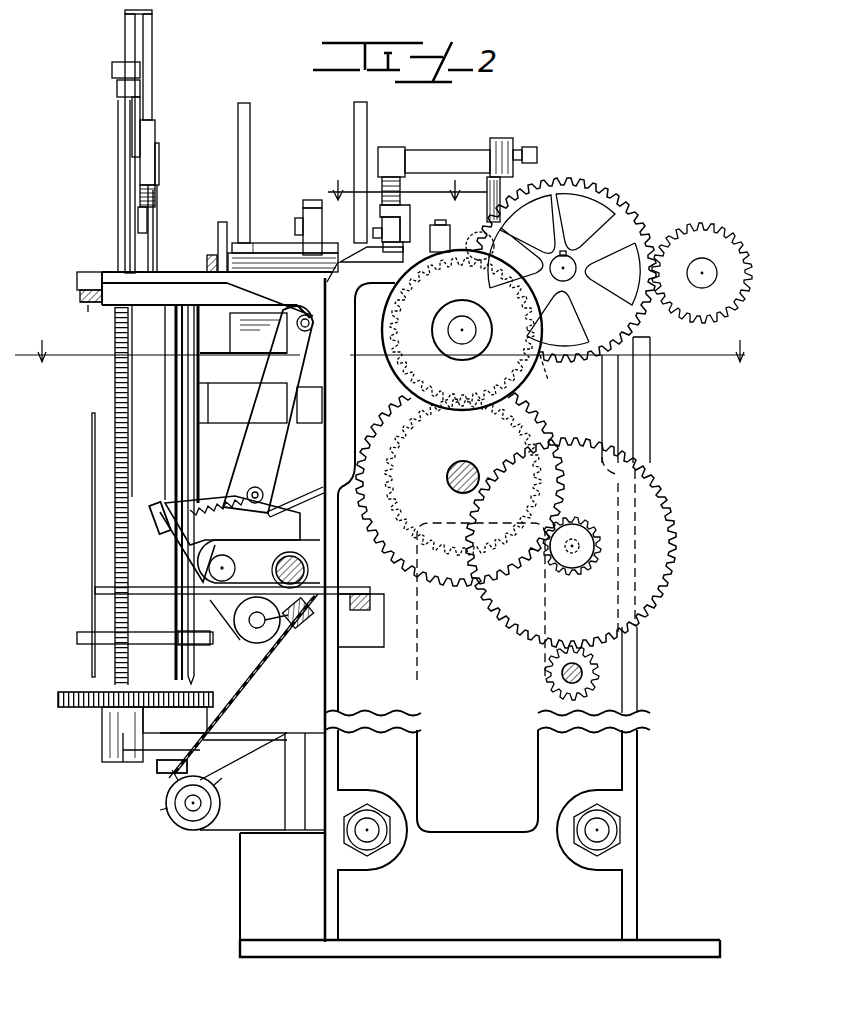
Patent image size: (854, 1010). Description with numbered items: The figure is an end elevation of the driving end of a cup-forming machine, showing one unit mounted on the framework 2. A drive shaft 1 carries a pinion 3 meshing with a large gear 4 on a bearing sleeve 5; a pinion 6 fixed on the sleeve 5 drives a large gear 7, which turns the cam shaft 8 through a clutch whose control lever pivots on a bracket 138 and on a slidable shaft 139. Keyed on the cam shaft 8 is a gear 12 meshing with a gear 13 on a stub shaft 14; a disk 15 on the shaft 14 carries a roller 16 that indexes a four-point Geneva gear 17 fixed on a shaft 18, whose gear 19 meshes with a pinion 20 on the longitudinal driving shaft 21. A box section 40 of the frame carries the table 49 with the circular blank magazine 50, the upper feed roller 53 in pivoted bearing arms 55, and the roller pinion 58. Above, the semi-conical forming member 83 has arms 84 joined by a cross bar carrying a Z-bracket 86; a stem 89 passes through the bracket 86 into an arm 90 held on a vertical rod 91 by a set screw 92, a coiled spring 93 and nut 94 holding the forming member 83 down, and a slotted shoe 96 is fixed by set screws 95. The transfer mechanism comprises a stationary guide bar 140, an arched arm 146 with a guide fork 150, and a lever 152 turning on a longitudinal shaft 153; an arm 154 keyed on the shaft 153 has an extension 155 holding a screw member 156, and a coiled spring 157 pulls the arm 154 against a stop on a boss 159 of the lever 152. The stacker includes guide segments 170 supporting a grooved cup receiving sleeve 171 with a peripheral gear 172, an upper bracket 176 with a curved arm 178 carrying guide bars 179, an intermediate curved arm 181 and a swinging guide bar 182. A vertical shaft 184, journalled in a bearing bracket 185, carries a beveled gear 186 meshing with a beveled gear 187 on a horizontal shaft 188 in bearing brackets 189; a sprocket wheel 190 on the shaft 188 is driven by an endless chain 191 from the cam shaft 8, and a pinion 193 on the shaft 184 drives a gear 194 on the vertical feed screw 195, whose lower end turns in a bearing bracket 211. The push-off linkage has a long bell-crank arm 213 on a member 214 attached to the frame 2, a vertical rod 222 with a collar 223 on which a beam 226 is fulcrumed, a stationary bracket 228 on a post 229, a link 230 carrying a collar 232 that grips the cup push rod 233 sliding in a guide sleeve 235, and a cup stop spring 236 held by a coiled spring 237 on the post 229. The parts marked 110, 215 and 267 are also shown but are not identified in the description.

The drive shaft 1 is at (560, 680).
The framework 2 is at (627, 764).
The pinion 3 is at (562, 688).
The large gear 4 is at (655, 582).
The bearing sleeve 5 is at (578, 568).
The pinion 6 is at (562, 578).
The large gear 7 is at (445, 565).
The cam shaft 8 is at (464, 462).
The gear 12 is at (400, 472).
The gear 13 is at (438, 312).
The stub shaft 14 is at (450, 330).
The disk 15 is at (545, 378).
The roller 16 is at (556, 257).
The four-point Geneva gear 17 is at (600, 253).
The shaft 18 is at (570, 280).
The gear 19 is at (566, 183).
The pinion 20 is at (702, 273).
The longitudinal driving shaft 21 is at (650, 400).
The box section 40 is at (268, 340).
The table 49 is at (172, 272).
The circular magazine 50 is at (250, 204).
The upper feed roller 53 is at (264, 258).
The pivoted bearing arms 55 is at (216, 242).
The pinion 58 is at (193, 265).
The forming member 83 is at (330, 280).
The rearwardly extending arms 84 is at (377, 261).
The Z-bracket 86 is at (410, 208).
The stem 89 is at (378, 230).
The arm 90 is at (488, 152).
The vertical rod 91 is at (512, 200).
The set screw 92 is at (528, 148).
The coiled spring 93 is at (403, 162).
The nut 94 is at (401, 184).
The set screws 95 is at (465, 226).
The slotted shoe 96 is at (472, 238).
The rod end 110 is at (358, 589).
The bracket 138 is at (361, 620).
The slidable shaft 139 is at (276, 564).
The horizontal stationary guide bar 140 is at (217, 288).
The arched arm 146 is at (317, 200).
The guide fork 150 is at (305, 210).
The lever 152 is at (268, 409).
The longitudinal shaft 153 is at (235, 570).
The arm 154 is at (232, 520).
The extension 155 is at (192, 495).
The adjustable screw member 156 is at (158, 505).
The coiled spring 157 is at (250, 487).
The boss 159 is at (282, 512).
The guide segments 170 is at (80, 297).
The cup receiving sleeve 171 is at (88, 312).
The external peripheral gear 172 is at (80, 302).
The upper bracket 176 is at (260, 403).
The curved arm 178 is at (175, 420).
The vertical cup guide bars 179 is at (170, 352).
The intermediate curved arm 181 is at (148, 642).
The swinging cup guide bar 182 is at (92, 542).
The vertical shaft 184 is at (190, 445).
The bearing bracket 185 is at (225, 708).
The beveled gear 186 is at (160, 773).
The beveled gear 187 is at (176, 820).
The long horizontal shaft 188 is at (193, 822).
The bearing brackets 189 is at (262, 781).
The sprocket wheel 190 is at (188, 812).
The endless chain 191 is at (268, 669).
The pinion 193 is at (147, 689).
The gear 194 is at (102, 725).
The vertical feed screw 195 is at (100, 589).
The bearing bracket 211 is at (123, 745).
The long bell-crank arm 213 is at (168, 545).
The frame-attached member 214 is at (290, 631).
The pivot 215 is at (243, 638).
The vertical rod 222 is at (128, 248).
The collar 223 is at (125, 80).
The beam 226 is at (130, 115).
The stationary bracket 228 is at (159, 158).
The vertical post 229 is at (157, 246).
The upwardly directed link 230 is at (125, 40).
The collar 232 is at (152, 12).
The cup push rod 233 is at (152, 70).
The guide sleeve 235 is at (150, 135).
The cup stop spring 236 is at (138, 224).
The coiled spring 237 is at (140, 198).
The block 267 is at (77, 285).